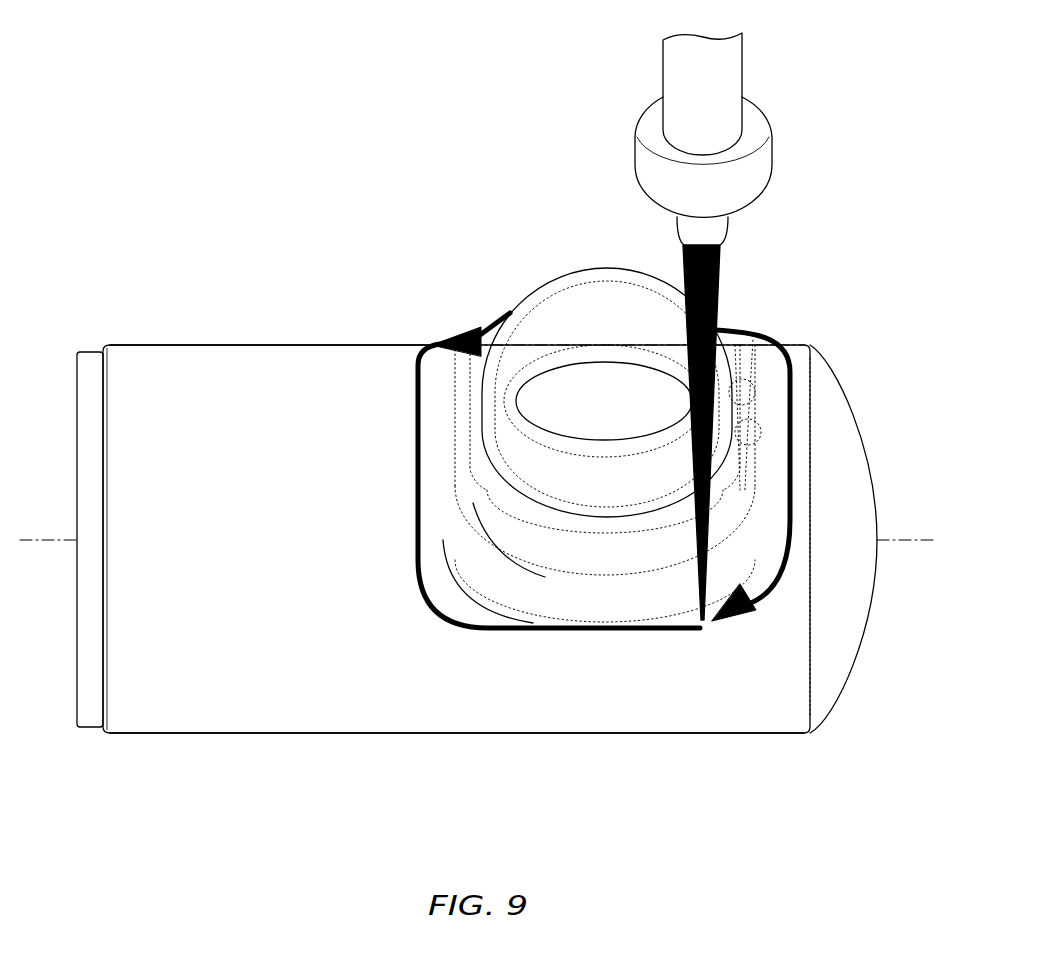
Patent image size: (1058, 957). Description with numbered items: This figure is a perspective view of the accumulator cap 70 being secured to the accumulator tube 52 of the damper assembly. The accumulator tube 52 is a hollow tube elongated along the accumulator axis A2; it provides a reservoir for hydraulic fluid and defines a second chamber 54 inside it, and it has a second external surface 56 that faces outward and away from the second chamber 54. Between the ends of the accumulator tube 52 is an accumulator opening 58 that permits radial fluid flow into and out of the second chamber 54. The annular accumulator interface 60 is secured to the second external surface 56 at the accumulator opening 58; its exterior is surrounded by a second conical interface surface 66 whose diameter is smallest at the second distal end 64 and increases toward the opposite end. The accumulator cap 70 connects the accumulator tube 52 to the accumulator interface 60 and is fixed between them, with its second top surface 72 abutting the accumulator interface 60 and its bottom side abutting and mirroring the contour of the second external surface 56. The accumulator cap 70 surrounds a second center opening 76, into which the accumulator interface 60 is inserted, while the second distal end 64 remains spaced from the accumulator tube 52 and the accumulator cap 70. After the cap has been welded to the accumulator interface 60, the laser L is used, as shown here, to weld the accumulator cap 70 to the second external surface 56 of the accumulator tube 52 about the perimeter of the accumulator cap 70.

The laser L is at (725, 62).
The accumulator tube 52 is at (262, 375).
The second chamber 54 is at (201, 406).
The second external surface 56 is at (238, 695).
The accumulator opening 58 is at (745, 430).
The accumulator interface 60 is at (487, 378).
The second distal end 64 is at (537, 300).
The second conical interface surface 66 is at (533, 457).
The accumulator cap 70 is at (770, 405).
The second top surface 72 is at (770, 440).
The second center opening 76 is at (580, 523).
The accumulator axis A2 is at (40, 535).